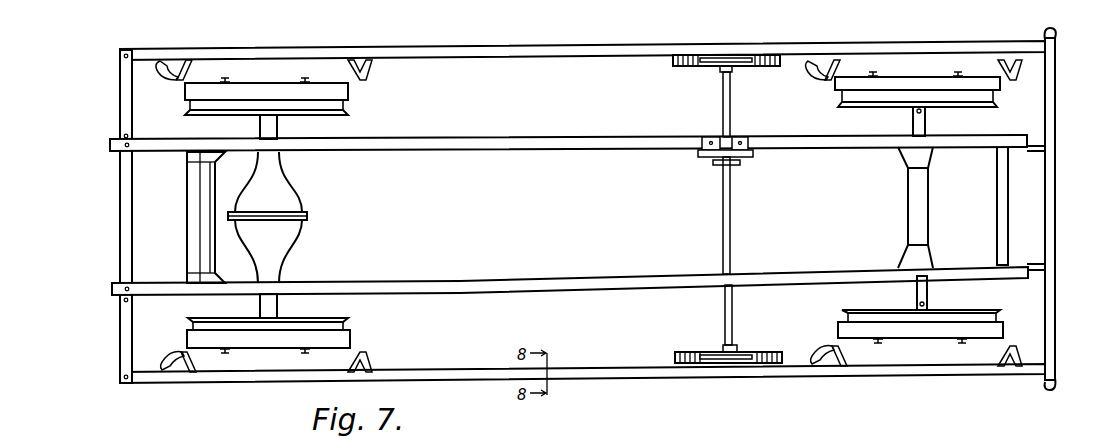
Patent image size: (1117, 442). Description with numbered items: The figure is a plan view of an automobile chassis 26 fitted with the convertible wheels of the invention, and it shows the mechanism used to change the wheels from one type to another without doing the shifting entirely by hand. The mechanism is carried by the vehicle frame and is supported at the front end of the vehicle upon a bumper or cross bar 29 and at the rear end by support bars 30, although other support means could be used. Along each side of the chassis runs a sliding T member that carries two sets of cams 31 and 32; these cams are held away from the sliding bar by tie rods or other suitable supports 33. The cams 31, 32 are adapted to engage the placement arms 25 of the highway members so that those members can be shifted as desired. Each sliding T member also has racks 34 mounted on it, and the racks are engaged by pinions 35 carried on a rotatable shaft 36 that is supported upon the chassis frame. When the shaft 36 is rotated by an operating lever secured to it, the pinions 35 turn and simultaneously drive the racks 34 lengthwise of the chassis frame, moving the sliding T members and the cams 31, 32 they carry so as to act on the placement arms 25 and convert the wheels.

The placement arm 25 is at (880, 346).
The automobile chassis 26 is at (585, 212).
The bumper or cross bar 29 is at (1056, 199).
The support bar 30 is at (120, 86).
The cam 31 is at (364, 68).
The cam 32 is at (168, 76).
The tie rod 33 is at (188, 69).
The rack 34 is at (672, 62).
The pinion 35 is at (705, 64).
The rotatable shaft 36 is at (731, 96).